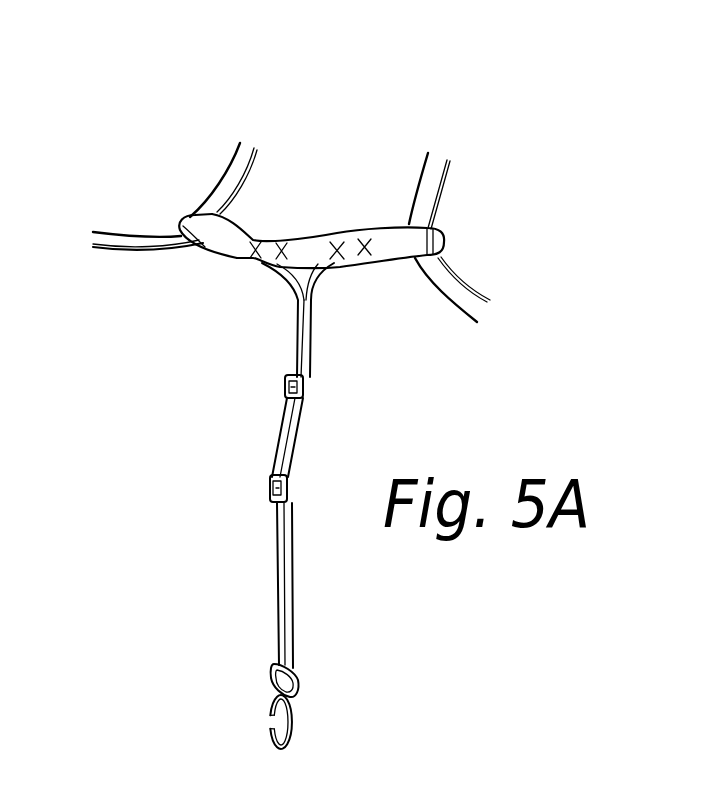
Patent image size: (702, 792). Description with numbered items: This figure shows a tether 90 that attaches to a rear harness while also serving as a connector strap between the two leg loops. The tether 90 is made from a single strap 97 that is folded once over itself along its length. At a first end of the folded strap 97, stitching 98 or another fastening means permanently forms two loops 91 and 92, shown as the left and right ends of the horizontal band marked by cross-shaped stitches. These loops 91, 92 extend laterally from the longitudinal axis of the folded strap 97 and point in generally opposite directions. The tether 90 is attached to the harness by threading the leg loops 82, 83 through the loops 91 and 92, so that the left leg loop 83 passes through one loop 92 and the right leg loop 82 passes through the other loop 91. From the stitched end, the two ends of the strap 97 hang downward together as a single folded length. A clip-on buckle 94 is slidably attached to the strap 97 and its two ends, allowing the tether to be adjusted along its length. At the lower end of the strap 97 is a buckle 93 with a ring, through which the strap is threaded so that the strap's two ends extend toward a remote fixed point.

The leg loop 82 is at (460, 213).
The leg loop 83 is at (167, 188).
The tether 90 is at (341, 172).
The loop 91 is at (397, 260).
The loop 92 is at (240, 260).
The buckle 93 is at (300, 678).
The clip-on buckle 94 is at (273, 500).
The strap 97 is at (312, 257).
The stitching 98 is at (275, 237).